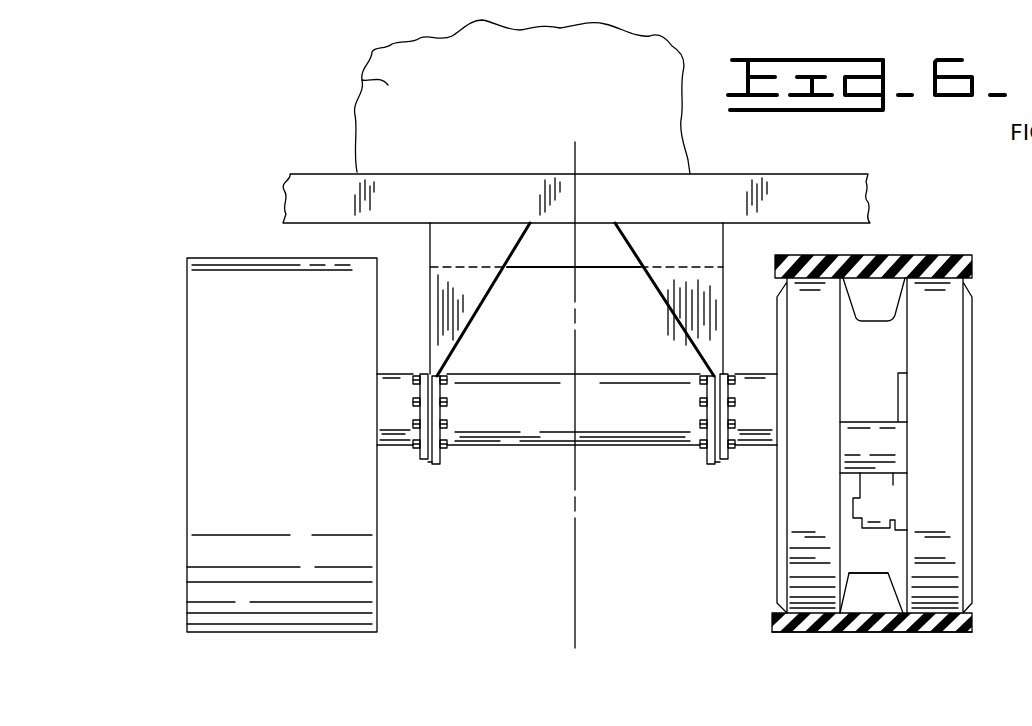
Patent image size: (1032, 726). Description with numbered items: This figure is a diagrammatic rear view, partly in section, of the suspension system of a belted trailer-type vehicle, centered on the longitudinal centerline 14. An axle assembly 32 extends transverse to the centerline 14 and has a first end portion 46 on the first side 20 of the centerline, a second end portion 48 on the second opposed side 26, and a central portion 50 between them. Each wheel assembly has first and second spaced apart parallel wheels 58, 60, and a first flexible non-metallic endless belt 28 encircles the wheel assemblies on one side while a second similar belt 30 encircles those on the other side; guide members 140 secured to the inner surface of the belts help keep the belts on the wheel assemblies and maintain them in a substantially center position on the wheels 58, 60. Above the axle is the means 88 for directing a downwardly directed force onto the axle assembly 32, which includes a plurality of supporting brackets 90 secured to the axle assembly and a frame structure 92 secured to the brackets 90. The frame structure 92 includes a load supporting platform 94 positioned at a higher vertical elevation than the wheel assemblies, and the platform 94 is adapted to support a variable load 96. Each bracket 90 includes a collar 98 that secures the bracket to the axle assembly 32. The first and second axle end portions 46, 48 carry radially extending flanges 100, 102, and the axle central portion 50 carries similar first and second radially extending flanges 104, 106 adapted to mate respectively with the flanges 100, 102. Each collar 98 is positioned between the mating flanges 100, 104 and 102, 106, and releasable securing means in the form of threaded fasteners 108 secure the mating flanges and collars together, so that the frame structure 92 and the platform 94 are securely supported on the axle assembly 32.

The longitudinal centerline 14 is at (575, 590).
The first side 20 is at (759, 470).
The second opposed side 26 is at (400, 472).
The first flexible non-metallic endless belt 28 is at (877, 631).
The second belt 30 is at (195, 496).
The axle assembly 32 is at (553, 480).
The first end portion 46 is at (762, 374).
The second end portion 48 is at (393, 374).
The central portion 50 is at (560, 382).
The first wheel 58 is at (953, 503).
The second wheel 60 is at (790, 547).
The means for directing a downwardly directed force 88 is at (294, 242).
The supporting brackets 90 is at (462, 255).
The frame structure 92 is at (535, 255).
The load supporting platform 94 is at (483, 209).
The variable load 96 is at (352, 85).
The collar 98 is at (430, 462).
The radially extending flange 100 is at (736, 413).
The radially extending flange 102 is at (415, 412).
The first radially extending flange 104 is at (706, 412).
The second radially extending flange 106 is at (450, 384).
The threaded fasteners 108 is at (449, 442).
The guide members 140 is at (887, 602).